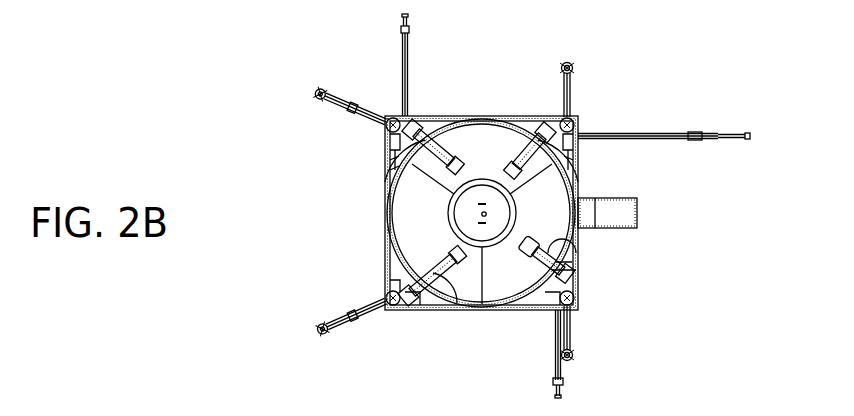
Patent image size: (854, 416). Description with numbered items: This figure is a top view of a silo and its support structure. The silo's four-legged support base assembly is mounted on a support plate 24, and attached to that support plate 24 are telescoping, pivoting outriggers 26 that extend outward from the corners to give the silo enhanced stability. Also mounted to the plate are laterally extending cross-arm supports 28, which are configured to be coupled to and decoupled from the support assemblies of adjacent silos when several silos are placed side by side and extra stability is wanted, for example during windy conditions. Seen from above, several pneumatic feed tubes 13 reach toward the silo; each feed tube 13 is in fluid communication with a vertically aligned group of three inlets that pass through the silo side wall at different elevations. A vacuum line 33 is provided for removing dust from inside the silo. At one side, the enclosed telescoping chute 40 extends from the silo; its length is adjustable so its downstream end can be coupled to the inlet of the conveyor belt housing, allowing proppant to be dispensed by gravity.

The pneumatic feed tube 13 is at (515, 140).
The support plate 24 is at (580, 165).
The outrigger 26 is at (360, 113).
The cross-arm support 28 is at (408, 62).
The vacuum line 33 is at (580, 246).
The telescoping chute 40 is at (630, 212).